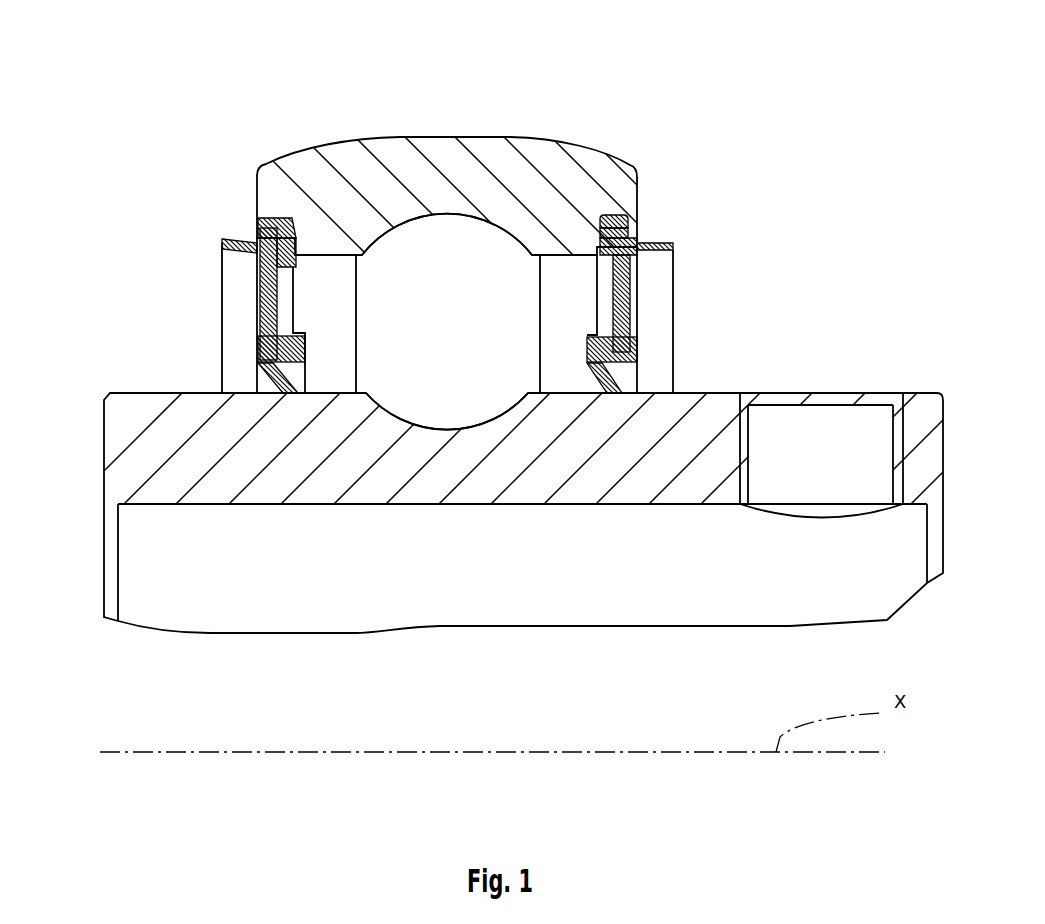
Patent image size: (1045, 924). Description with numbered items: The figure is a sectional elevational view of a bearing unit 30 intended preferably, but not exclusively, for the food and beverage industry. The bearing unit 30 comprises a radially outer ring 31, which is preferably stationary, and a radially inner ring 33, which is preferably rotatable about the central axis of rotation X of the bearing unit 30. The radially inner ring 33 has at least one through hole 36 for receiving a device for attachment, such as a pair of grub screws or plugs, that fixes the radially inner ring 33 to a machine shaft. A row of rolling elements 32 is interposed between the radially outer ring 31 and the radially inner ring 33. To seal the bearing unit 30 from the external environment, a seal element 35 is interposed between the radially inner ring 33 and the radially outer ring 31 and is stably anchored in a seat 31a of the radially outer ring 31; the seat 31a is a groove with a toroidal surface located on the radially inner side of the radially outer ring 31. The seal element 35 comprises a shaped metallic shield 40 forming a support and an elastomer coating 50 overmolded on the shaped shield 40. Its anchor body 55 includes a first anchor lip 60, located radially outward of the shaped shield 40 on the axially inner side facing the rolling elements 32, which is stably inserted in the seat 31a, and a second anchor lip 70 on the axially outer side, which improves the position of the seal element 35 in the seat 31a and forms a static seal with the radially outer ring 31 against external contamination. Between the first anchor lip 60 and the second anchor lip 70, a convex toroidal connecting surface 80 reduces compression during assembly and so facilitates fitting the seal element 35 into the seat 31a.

The bearing unit 30 is at (241, 143).
The radially outer ring 31 is at (305, 198).
The seat 31a is at (270, 258).
The rolling elements 32 is at (418, 375).
The radially inner ring 33 is at (227, 448).
The seal element 35 is at (657, 308).
The through hole 36 is at (887, 462).
The shaped metallic shield 40 is at (625, 327).
The elastomer coating 50 is at (640, 266).
The anchor body 55 is at (659, 209).
The first anchor lip 60 is at (630, 217).
The second anchor lip 70 is at (628, 236).
The convex connecting surface 80 is at (627, 219).